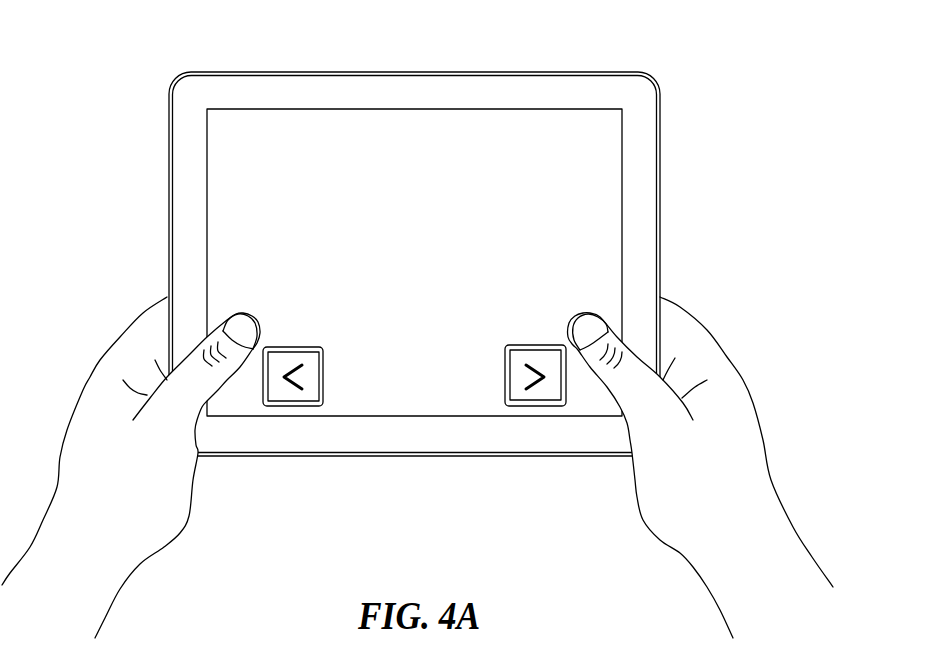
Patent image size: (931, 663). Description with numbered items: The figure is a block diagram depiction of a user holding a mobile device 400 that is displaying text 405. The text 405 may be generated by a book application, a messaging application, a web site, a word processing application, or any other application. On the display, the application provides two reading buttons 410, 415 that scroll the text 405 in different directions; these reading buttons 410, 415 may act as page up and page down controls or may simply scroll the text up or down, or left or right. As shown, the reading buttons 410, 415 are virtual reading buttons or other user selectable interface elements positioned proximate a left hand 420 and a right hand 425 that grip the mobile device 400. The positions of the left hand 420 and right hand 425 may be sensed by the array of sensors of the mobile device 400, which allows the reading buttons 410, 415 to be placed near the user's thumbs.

The mobile device 400 is at (621, 43).
The text 405 is at (216, 200).
The reading button 410 is at (326, 377).
The reading button 415 is at (505, 377).
The left hand 420 is at (86, 383).
The right hand 425 is at (744, 381).